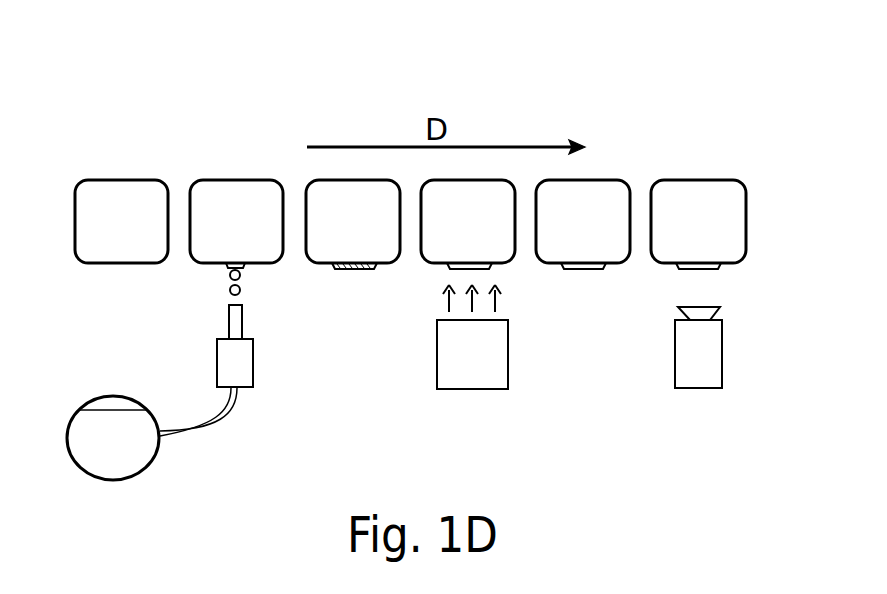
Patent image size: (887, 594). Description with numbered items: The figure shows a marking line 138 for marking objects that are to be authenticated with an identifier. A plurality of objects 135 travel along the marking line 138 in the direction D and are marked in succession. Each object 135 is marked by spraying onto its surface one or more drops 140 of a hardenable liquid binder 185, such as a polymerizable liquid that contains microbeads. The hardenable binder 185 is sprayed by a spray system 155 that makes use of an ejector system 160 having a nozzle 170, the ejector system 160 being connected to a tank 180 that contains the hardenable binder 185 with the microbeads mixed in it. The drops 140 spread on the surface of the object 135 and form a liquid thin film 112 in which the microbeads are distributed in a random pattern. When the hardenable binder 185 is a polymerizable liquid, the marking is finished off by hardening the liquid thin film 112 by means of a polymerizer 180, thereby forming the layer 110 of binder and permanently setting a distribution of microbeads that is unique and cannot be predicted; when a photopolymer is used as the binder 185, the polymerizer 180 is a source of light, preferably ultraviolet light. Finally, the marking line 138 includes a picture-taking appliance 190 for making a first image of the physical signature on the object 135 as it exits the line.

The layer of binder 110 is at (495, 266).
The liquid thin film 112 is at (243, 268).
The object to be authenticated 135 is at (122, 180).
The marking line 138 is at (689, 132).
The drops of hardenable liquid binder 140 is at (228, 290).
The spray system 155 is at (398, 352).
The ejector system 160 is at (253, 368).
The nozzle 170 is at (242, 328).
The tank / polymerizer 180 is at (162, 440).
The hardenable liquid binder 185 is at (118, 460).
The picture-taking appliance 190 is at (698, 389).